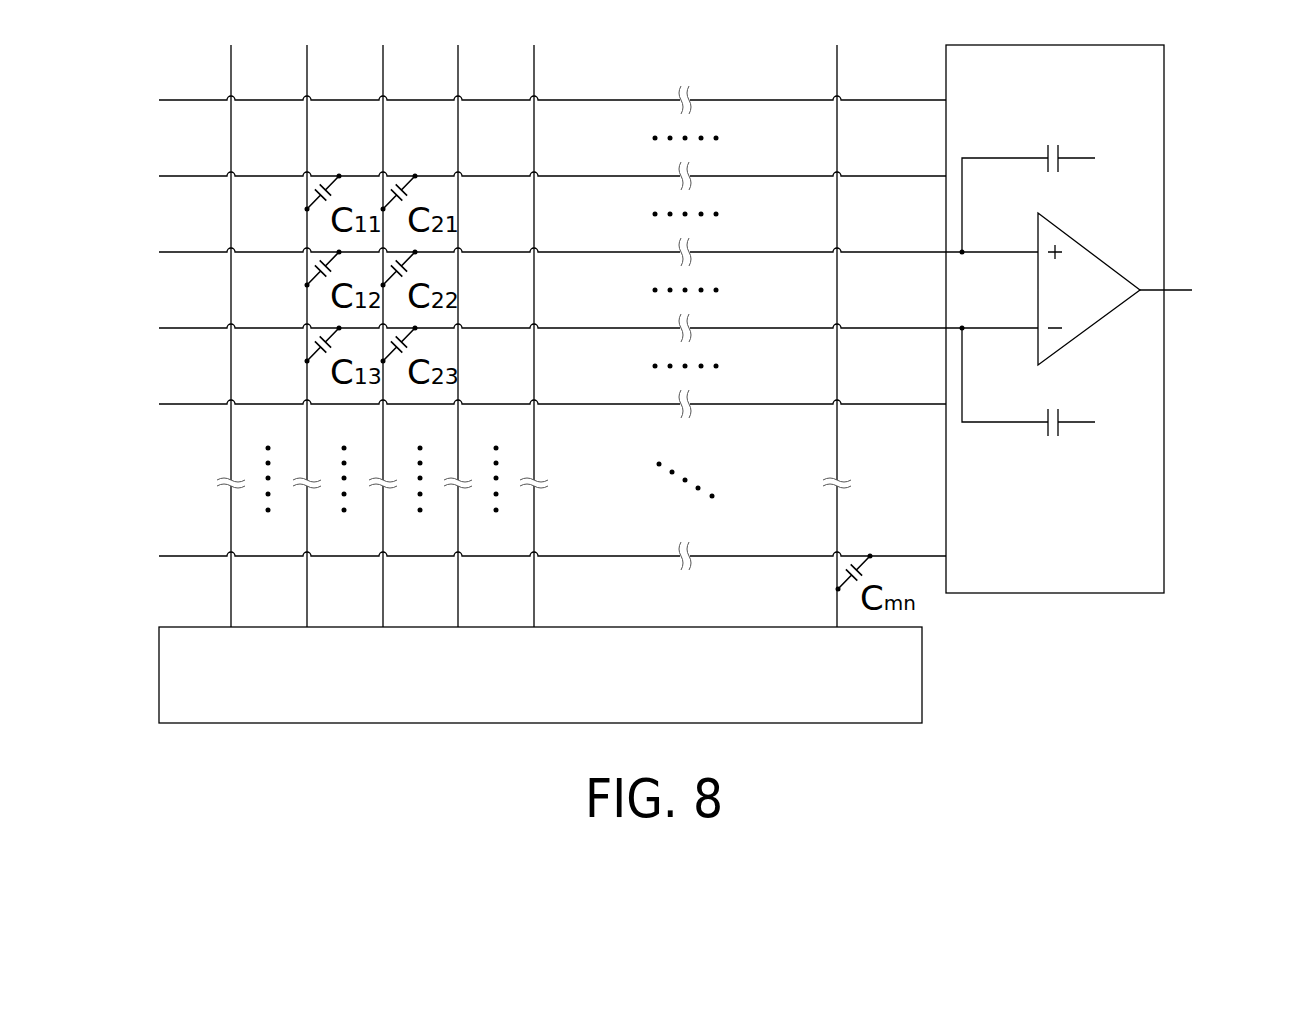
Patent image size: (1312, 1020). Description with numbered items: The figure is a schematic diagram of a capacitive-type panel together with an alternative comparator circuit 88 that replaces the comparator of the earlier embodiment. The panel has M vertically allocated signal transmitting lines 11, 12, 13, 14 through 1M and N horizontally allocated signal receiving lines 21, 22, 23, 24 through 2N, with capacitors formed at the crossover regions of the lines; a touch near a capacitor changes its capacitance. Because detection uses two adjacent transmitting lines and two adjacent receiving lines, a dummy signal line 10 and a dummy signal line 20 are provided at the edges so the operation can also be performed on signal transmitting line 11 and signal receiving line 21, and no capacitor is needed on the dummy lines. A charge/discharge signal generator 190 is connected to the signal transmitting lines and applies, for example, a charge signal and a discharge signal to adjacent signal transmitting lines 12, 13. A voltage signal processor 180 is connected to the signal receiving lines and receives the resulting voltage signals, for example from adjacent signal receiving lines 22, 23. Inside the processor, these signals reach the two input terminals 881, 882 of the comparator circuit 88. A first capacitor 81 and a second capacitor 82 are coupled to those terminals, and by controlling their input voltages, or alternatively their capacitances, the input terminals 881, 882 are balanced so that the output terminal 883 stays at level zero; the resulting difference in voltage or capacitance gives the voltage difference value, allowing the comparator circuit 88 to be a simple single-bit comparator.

The dummy signal line 20 is at (529, 102).
The signal receiving line 21 is at (529, 178).
The signal receiving line 22 is at (529, 254).
The signal receiving line 23 is at (529, 330).
The signal receiving line 24 is at (529, 406).
The signal receiving line 2N is at (529, 558).
The dummy signal line 10 is at (231, 359).
The signal transmitting line 11 is at (307, 359).
The signal transmitting line 12 is at (383, 359).
The signal transmitting line 13 is at (458, 359).
The signal transmitting line 14 is at (534, 359).
The signal transmitting line 1M is at (838, 358).
The voltage signal processor 180 is at (1164, 97).
The charge/discharge signal generator 190 is at (922, 675).
The comparator circuit 88 is at (1100, 258).
The input terminal 881 is at (1002, 248).
The input terminal 882 is at (1002, 333).
The output terminal 883 is at (1193, 291).
The first capacitor 81 is at (1048, 148).
The second capacitor 82 is at (1048, 430).